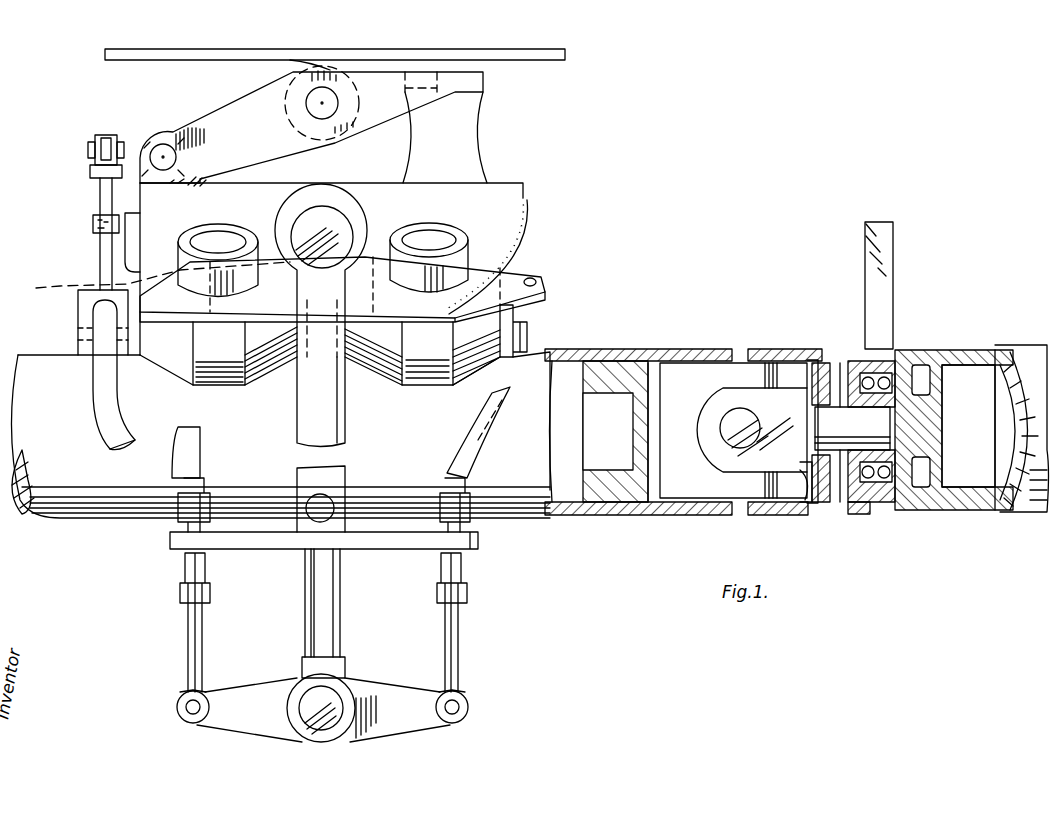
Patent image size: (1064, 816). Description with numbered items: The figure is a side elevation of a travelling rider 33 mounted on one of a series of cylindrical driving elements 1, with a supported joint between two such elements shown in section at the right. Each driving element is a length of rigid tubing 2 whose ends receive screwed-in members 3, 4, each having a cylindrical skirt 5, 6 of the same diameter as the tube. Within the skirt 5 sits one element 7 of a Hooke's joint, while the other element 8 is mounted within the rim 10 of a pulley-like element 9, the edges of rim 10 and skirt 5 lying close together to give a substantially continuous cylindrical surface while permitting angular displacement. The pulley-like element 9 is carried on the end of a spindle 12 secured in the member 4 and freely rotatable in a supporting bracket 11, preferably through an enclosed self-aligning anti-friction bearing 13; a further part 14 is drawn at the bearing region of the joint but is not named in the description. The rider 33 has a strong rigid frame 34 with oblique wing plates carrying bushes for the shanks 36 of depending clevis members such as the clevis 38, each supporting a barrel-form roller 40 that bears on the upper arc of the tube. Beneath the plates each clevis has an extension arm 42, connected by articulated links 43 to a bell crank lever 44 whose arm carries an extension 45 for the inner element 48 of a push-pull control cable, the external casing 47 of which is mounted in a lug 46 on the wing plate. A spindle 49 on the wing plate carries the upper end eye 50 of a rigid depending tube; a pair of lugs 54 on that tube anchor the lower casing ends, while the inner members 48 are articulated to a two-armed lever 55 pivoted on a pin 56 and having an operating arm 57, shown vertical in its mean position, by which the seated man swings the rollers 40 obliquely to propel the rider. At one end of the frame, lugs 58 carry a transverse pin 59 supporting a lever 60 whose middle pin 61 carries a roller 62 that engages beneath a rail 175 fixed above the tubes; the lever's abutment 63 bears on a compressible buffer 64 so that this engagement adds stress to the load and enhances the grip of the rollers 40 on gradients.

The cylindrical driving elements 1 is at (664, 348).
The rigid tubing 2 is at (525, 505).
The member 3 is at (622, 380).
The member 4 is at (978, 370).
The cylindrical skirt 5 is at (720, 350).
The cylindrical skirt 6 is at (932, 352).
The element of Hooke's joint 7 is at (710, 498).
The element of Hooke's joint 8 is at (752, 430).
The pulley-like element 9 is at (826, 510).
The rim 10 is at (778, 350).
The supporting bracket 11 is at (880, 296).
The spindle 12 is at (852, 432).
The anti-friction bearing 13 is at (895, 360).
The bearing retainer 14 is at (850, 515).
The travelling rider 33 is at (539, 219).
The frame 34 is at (505, 190).
The shanks 36 is at (218, 242).
The clevis member 38 is at (218, 322).
The roller 40 is at (398, 362).
The longitudinal extension arm 42 is at (157, 280).
The articulated links 43 is at (98, 186).
The bell crank lever 44 is at (210, 500).
The extension 45 is at (106, 137).
The lug 46 is at (88, 321).
The external casing 47 is at (341, 432).
The internal displaceable element 48 is at (188, 628).
The spindle 49 is at (352, 225).
The upper end eye 50 is at (340, 192).
The lugs 54 is at (272, 549).
The two-armed lever 55 is at (246, 692).
The pin 56 is at (330, 705).
The operating arm 57 is at (322, 612).
The lugs 58 is at (225, 177).
The transverse pin 59 is at (163, 144).
The lever 60 is at (216, 117).
The transverse pin 61 is at (322, 114).
The roller 62 is at (300, 65).
The abutment 63 is at (487, 80).
The buffer 64 is at (445, 137).
The rail 175 is at (385, 50).